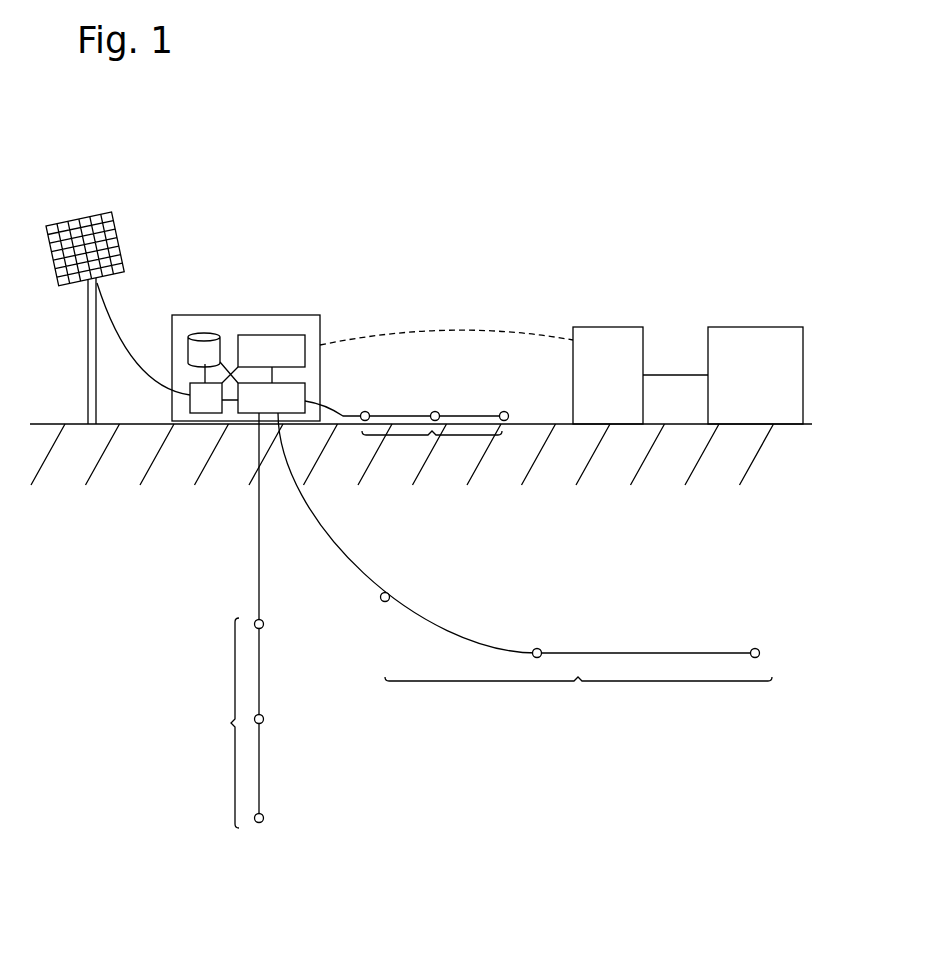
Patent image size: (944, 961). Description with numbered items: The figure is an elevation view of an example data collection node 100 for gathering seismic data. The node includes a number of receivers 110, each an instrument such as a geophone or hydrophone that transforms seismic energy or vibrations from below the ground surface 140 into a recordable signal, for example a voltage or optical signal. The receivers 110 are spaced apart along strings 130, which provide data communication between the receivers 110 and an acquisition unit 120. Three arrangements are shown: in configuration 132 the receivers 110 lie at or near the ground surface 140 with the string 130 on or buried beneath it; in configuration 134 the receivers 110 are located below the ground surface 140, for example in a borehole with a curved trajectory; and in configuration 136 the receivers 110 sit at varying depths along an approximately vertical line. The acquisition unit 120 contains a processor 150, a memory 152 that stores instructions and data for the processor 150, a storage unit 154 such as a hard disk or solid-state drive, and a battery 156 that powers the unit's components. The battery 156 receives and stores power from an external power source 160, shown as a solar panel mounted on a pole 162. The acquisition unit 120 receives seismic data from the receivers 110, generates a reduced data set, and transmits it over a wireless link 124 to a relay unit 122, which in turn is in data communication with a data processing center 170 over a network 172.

The data collection node 100 is at (332, 182).
The receiver 110 is at (367, 412).
The acquisition unit 120 is at (235, 315).
The relay unit 122 is at (610, 326).
The wireless link 124 is at (453, 330).
The string 130 is at (482, 415).
The configuration 132 is at (432, 449).
The configuration 134 is at (578, 694).
The configuration 136 is at (215, 723).
The ground surface 140 is at (37, 422).
The processor 150 is at (307, 380).
The memory 152 is at (283, 335).
The storage unit 154 is at (202, 333).
The battery 156 is at (190, 407).
The external power source 160 is at (113, 227).
The pole 162 is at (87, 318).
The data processing center 170 is at (752, 326).
The network 172 is at (657, 374).